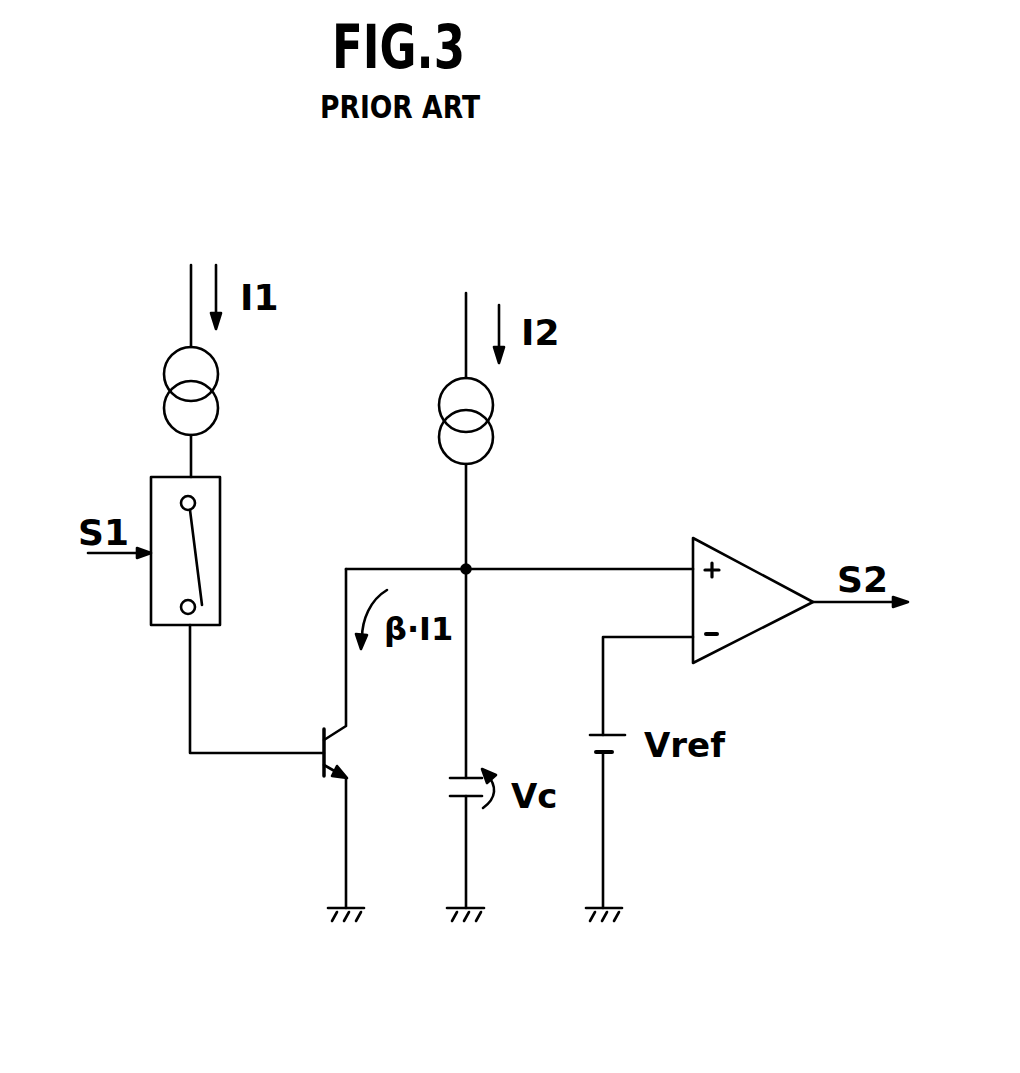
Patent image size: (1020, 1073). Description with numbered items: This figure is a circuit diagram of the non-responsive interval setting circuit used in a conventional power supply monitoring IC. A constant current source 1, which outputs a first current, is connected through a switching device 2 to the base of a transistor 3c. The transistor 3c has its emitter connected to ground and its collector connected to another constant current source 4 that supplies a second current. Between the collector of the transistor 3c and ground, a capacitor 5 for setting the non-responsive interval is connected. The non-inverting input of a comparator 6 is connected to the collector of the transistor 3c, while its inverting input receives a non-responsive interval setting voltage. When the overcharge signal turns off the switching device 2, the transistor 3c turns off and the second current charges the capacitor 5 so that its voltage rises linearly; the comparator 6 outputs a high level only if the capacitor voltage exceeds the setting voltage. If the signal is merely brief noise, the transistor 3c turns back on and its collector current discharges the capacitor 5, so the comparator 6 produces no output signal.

The constant current source 1 is at (170, 356).
The switching device 2 is at (220, 514).
The transistor 3c is at (308, 783).
The constant current source 4 is at (445, 395).
The capacitor 5 is at (443, 808).
The comparator 6 is at (752, 568).